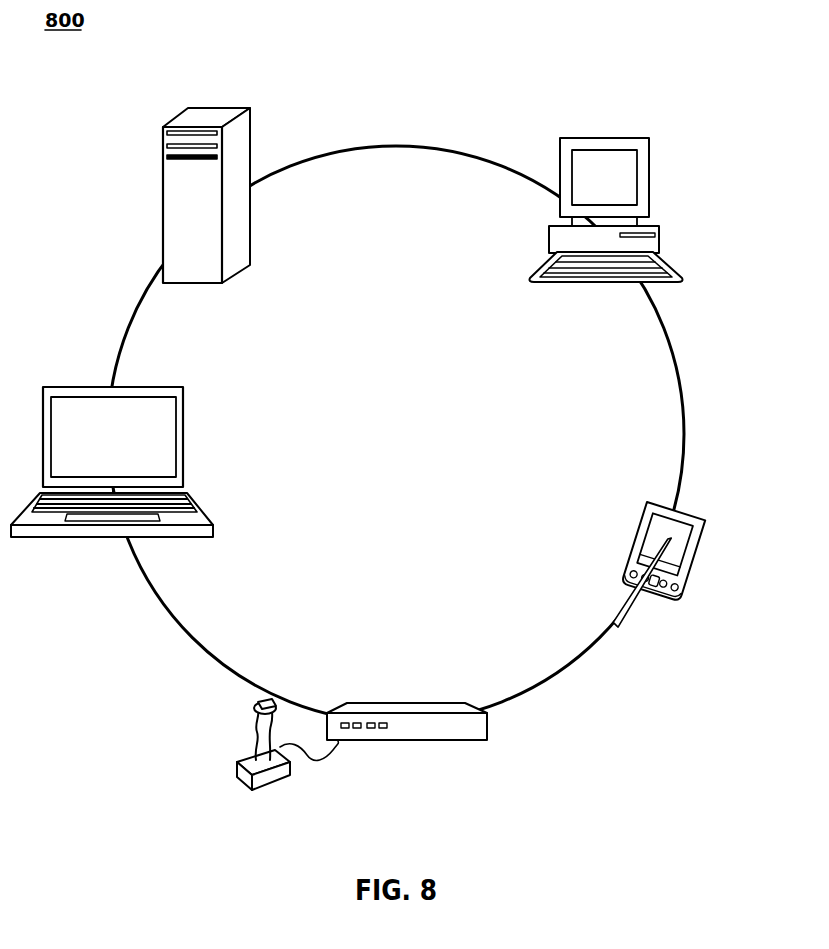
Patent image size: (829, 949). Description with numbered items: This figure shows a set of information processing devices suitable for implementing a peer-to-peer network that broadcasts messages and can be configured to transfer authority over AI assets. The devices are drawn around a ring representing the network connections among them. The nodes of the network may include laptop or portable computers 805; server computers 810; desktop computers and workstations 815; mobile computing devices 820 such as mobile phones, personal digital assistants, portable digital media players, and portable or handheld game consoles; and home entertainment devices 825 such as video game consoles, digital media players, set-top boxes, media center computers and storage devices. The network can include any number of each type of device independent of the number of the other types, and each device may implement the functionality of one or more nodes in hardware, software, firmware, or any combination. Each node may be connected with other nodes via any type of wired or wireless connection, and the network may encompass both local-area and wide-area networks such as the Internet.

The laptop or portable computers 805 is at (183, 437).
The server computers 810 is at (163, 201).
The desktop computers and workstations 815 is at (605, 138).
The mobile computing devices 820 is at (695, 512).
The home entertainment devices 825 is at (407, 740).